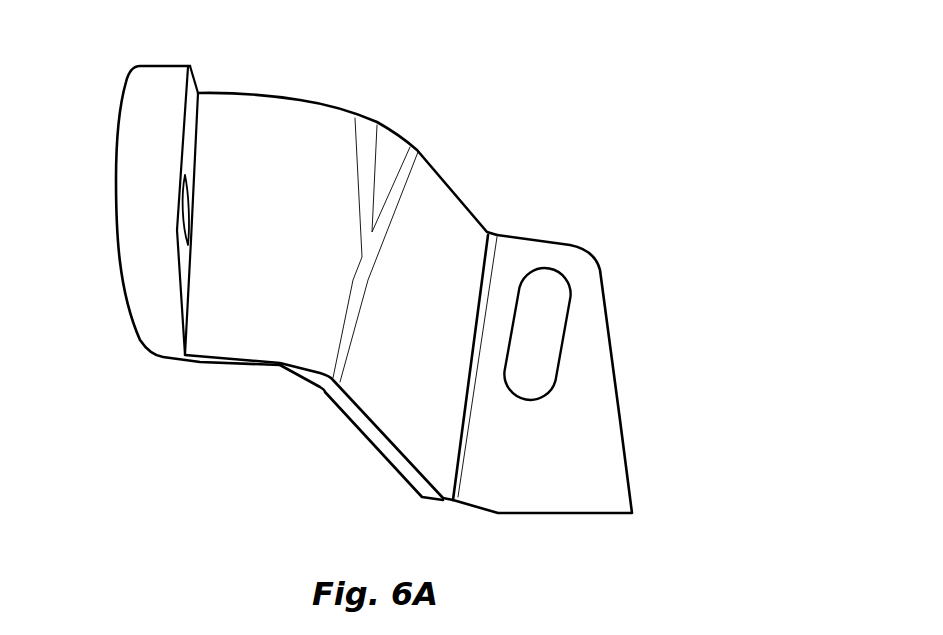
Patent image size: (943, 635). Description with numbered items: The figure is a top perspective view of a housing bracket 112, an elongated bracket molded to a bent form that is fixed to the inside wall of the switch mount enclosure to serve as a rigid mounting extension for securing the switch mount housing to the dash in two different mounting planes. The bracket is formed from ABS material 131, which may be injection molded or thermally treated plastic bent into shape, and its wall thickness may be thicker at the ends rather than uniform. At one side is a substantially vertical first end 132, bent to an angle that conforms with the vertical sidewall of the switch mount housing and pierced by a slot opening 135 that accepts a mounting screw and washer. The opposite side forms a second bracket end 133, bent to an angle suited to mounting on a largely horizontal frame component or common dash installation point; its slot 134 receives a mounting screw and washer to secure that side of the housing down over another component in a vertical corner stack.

The housing bracket 112 is at (453, 107).
The ABS material 131 is at (298, 308).
The first end 132 is at (115, 182).
The second bracket end 133 is at (630, 467).
The slot 134 is at (560, 345).
The slot opening 135 is at (192, 187).